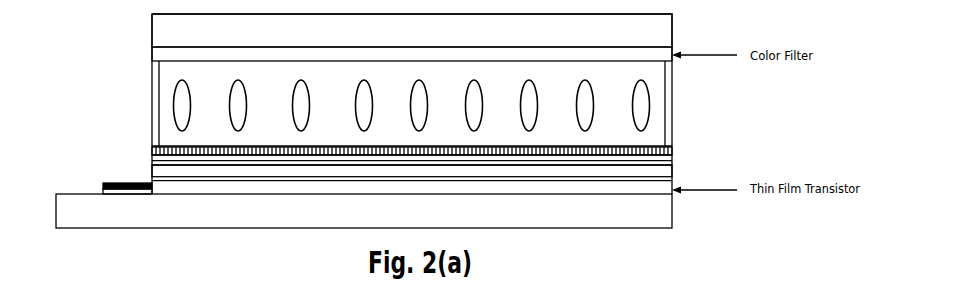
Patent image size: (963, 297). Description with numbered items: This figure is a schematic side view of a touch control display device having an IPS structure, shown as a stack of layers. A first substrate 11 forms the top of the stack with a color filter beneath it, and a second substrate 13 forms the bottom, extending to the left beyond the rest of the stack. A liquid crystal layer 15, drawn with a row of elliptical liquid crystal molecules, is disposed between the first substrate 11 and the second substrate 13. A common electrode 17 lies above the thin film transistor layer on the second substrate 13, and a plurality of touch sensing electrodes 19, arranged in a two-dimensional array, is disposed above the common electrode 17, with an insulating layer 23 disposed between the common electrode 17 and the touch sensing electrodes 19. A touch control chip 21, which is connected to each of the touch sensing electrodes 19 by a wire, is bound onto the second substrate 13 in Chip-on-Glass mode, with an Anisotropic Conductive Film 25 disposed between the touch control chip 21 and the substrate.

The first substrate 11 is at (676, 31).
The liquid crystal layer 15 is at (653, 105).
The touch sensing electrodes 19 is at (676, 145).
The insulating layer 23 is at (676, 156).
The common electrode 17 is at (676, 171).
The second substrate 13 is at (676, 212).
The touch control chip 21 is at (114, 176).
The Anisotropic Conductive Film (ACF) 25 is at (95, 189).